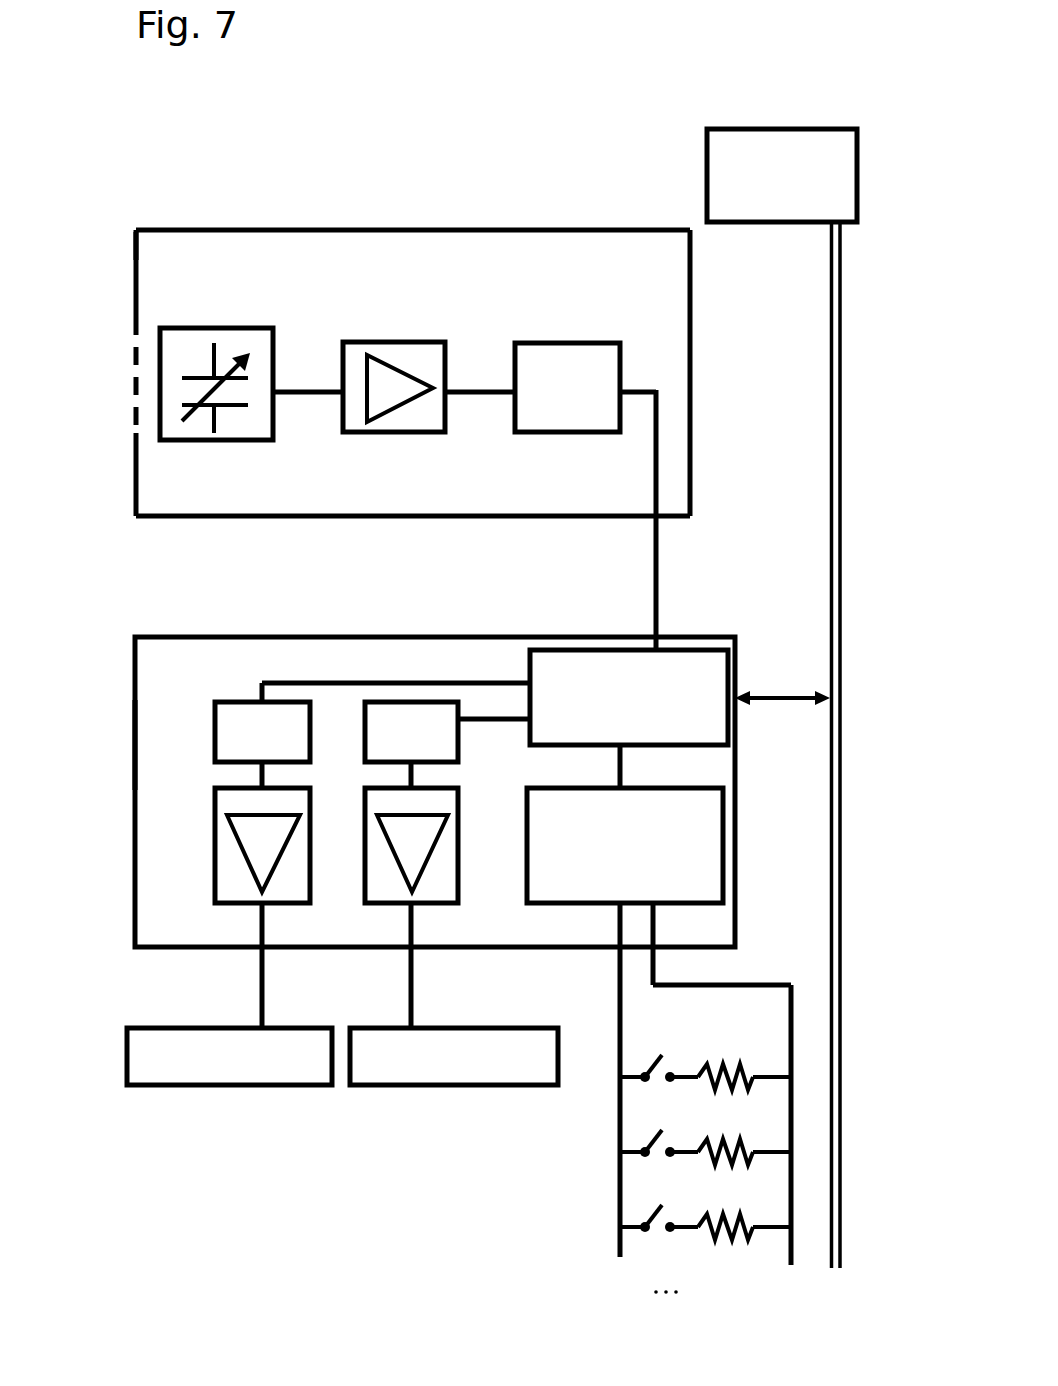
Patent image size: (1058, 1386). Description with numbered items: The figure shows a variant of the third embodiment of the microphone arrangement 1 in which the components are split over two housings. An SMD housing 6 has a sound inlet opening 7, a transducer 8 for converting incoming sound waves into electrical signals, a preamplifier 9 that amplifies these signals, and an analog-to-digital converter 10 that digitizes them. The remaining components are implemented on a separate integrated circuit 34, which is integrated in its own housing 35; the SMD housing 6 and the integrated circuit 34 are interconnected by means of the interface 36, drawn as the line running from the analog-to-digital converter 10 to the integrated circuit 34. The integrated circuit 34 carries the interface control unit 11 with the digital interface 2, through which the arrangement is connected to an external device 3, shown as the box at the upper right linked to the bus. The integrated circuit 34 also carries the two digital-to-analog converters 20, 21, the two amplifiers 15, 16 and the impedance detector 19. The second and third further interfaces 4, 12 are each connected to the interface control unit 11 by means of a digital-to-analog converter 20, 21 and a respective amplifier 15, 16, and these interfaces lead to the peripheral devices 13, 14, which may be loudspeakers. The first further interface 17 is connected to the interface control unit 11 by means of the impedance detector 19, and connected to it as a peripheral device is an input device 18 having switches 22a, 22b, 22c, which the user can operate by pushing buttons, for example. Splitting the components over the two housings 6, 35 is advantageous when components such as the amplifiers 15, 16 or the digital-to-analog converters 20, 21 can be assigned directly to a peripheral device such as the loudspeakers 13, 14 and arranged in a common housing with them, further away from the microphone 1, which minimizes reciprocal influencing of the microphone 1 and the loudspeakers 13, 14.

The microphone arrangement 1 is at (584, 292).
The digital interface 2 is at (795, 694).
The external device 3 is at (707, 165).
The further interface 4 is at (410, 975).
The SMD housing 6 is at (132, 243).
The sound inlet opening 7 is at (140, 340).
The transducer 8 is at (183, 348).
The preamplifier 9 is at (357, 365).
The analog-to-digital converter 10 is at (530, 363).
The interface control unit 11 is at (688, 650).
The further interface 12 is at (260, 960).
The peripheral device 13 is at (283, 1095).
The peripheral device 14 is at (493, 1092).
The amplifier 15 is at (213, 833).
The amplifier 16 is at (460, 830).
The first further interface 17 is at (660, 965).
The input device 18 is at (671, 1141).
The impedance detector 19 is at (725, 840).
The digital-to-analog converter 20 is at (208, 708).
The digital-to-analog converter 21 is at (364, 705).
The switch 22a is at (658, 1060).
The switch 22b is at (655, 1136).
The switch 22c is at (657, 1232).
The separate integrated circuit 34 is at (130, 608).
The housing 35 is at (133, 738).
The interface 36 is at (654, 560).